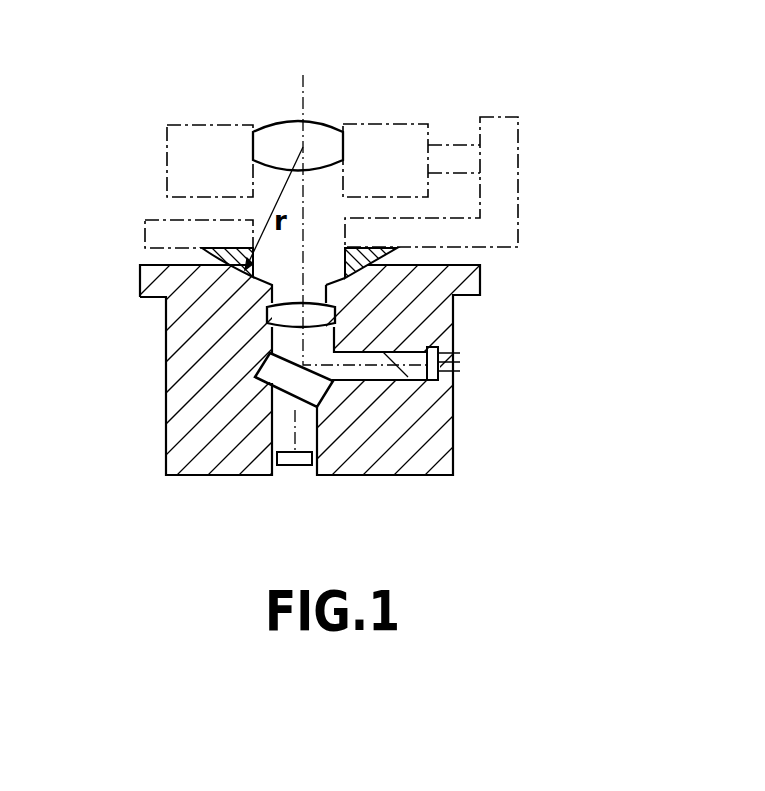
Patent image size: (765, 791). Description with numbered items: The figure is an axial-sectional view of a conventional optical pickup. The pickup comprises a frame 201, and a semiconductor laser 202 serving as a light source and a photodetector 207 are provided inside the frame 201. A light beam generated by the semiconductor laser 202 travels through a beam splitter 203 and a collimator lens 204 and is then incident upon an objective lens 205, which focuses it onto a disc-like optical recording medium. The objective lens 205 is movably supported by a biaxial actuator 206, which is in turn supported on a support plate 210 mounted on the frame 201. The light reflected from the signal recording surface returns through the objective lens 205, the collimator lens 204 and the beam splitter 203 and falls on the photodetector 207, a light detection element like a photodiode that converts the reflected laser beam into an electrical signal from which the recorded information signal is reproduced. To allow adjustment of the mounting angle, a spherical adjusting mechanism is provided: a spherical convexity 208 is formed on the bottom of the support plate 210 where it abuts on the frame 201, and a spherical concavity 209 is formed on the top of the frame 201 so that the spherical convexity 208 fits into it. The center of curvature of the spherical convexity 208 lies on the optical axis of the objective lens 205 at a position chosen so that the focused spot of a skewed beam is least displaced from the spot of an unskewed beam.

The frame 201 is at (445, 442).
The semiconductor laser 202 is at (440, 380).
The beam splitter 203 is at (320, 392).
The collimator lens 204 is at (337, 313).
The objective lens 205 is at (320, 130).
The biaxial actuator 206 is at (436, 113).
The photodetector 207 is at (295, 465).
The spherical convexity 208 is at (397, 255).
The spherical concavity 209 is at (230, 254).
The support plate 210 is at (503, 208).